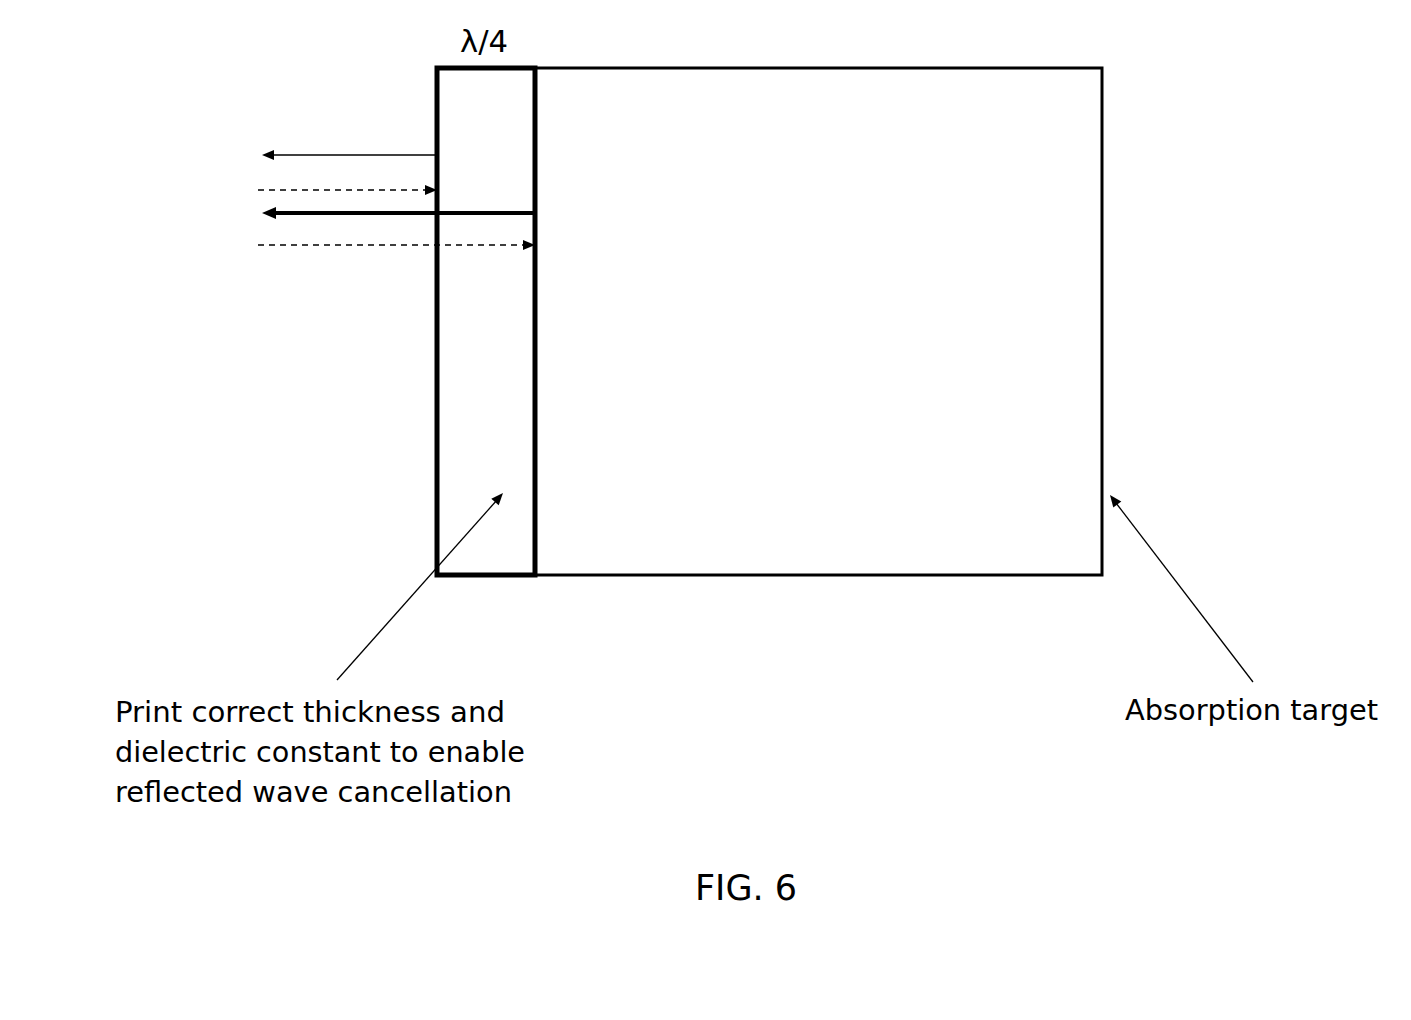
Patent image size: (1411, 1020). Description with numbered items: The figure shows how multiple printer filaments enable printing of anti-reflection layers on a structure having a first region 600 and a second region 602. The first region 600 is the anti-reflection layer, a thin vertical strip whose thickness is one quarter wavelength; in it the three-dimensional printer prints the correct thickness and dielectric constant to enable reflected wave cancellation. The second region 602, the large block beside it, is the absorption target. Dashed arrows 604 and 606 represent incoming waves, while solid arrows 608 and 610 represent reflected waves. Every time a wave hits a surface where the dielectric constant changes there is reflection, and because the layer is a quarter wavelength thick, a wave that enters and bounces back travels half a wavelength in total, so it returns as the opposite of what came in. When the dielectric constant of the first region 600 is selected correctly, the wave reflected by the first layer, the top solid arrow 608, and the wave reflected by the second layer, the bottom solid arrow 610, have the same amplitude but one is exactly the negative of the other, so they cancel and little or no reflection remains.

The first region 600 is at (455, 430).
The second region 602 is at (772, 507).
The dashed arrow 604 is at (258, 185).
The dashed arrow 606 is at (367, 250).
The top solid arrow 608 is at (262, 155).
The bottom solid arrow 610 is at (262, 214).